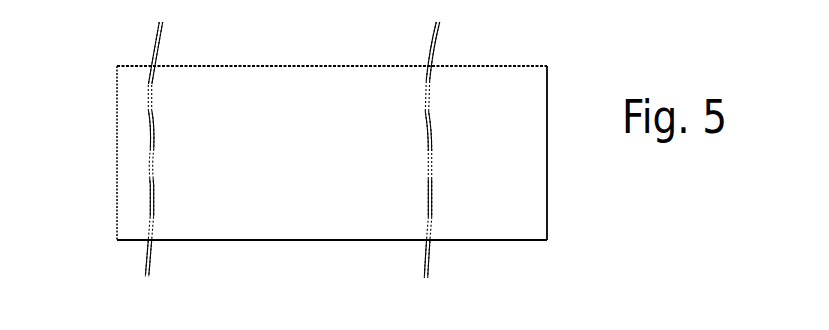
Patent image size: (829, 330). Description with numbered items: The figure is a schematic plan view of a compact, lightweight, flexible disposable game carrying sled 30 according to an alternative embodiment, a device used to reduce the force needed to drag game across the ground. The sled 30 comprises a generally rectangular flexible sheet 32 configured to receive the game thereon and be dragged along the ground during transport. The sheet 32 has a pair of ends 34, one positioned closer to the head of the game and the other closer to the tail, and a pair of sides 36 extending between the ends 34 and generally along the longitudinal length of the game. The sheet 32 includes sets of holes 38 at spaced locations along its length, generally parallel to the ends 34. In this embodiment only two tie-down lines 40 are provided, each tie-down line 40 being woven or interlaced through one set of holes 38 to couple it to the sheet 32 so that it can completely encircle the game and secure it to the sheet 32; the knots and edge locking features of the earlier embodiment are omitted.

The game carrying sled 30 is at (328, 167).
The flexible sheet 32 is at (328, 168).
The ends 34 is at (117, 183).
The sides 36 is at (243, 65).
The holes 38 is at (156, 182).
The tie-down lines 40 is at (155, 124).